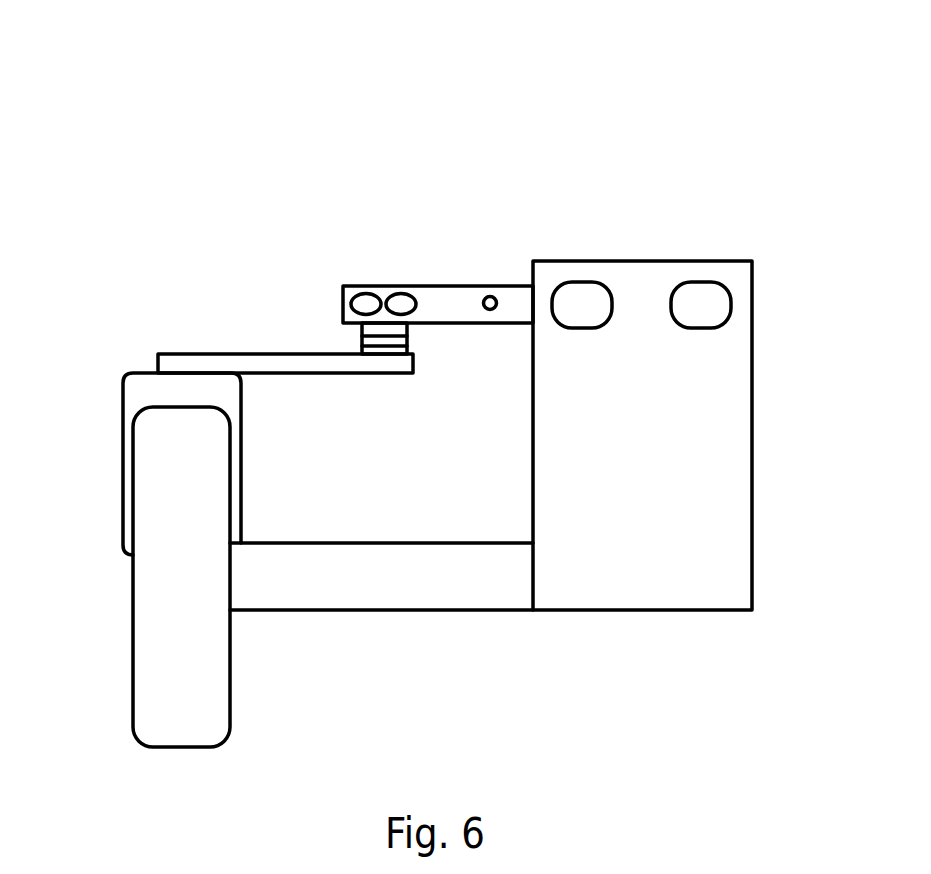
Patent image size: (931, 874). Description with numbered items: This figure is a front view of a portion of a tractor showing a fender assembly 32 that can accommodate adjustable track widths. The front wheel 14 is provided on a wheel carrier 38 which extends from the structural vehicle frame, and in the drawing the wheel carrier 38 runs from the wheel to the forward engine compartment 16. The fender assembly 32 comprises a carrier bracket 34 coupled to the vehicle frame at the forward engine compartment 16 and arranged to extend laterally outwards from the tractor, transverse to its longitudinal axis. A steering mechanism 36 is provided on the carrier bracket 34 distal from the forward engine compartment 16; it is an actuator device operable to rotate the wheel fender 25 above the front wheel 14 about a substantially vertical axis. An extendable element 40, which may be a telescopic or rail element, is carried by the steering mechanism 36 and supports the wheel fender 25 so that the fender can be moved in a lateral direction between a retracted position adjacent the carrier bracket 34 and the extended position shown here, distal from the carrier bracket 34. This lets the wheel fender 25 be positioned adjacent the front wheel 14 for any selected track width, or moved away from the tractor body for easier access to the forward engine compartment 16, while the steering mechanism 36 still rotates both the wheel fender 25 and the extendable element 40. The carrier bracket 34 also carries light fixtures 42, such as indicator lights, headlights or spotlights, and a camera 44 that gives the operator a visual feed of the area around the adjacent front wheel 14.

The front wheel 14 is at (165, 682).
The forward engine compartment 16 is at (692, 422).
The wheel fender 25 is at (242, 413).
The fender assembly 32 is at (203, 158).
The carrier bracket 34 is at (450, 310).
The steering mechanism 36 is at (358, 340).
The wheel carrier 38 is at (508, 583).
The extendable element 40 is at (183, 354).
The light fixtures 42 is at (368, 261).
The camera 44 is at (504, 271).